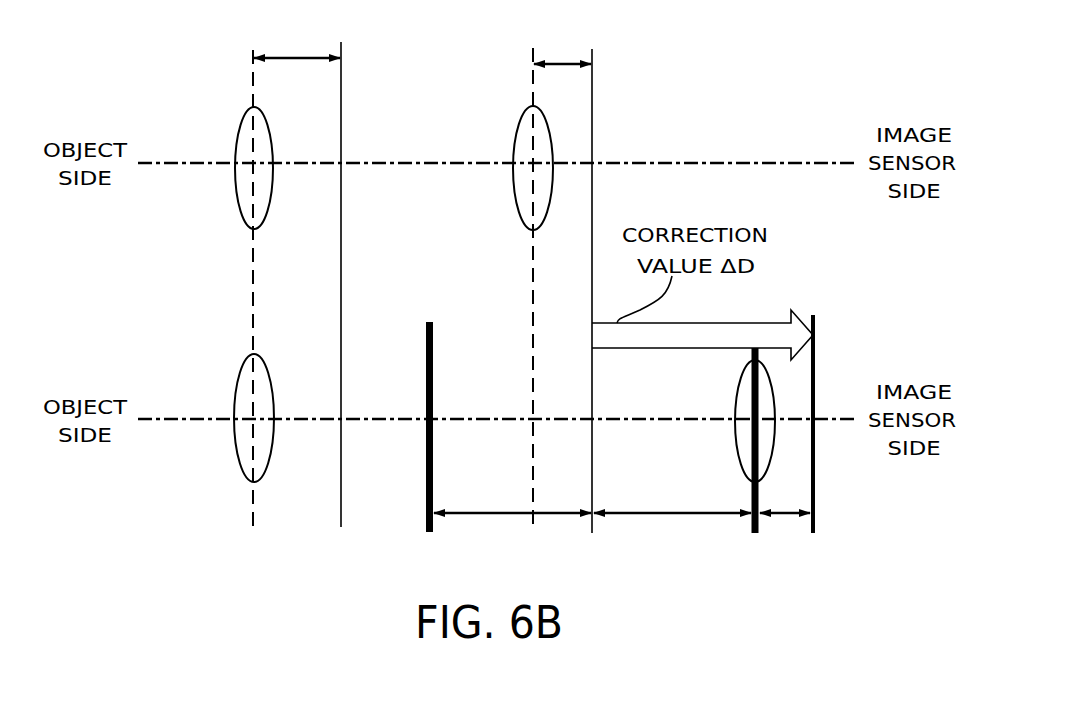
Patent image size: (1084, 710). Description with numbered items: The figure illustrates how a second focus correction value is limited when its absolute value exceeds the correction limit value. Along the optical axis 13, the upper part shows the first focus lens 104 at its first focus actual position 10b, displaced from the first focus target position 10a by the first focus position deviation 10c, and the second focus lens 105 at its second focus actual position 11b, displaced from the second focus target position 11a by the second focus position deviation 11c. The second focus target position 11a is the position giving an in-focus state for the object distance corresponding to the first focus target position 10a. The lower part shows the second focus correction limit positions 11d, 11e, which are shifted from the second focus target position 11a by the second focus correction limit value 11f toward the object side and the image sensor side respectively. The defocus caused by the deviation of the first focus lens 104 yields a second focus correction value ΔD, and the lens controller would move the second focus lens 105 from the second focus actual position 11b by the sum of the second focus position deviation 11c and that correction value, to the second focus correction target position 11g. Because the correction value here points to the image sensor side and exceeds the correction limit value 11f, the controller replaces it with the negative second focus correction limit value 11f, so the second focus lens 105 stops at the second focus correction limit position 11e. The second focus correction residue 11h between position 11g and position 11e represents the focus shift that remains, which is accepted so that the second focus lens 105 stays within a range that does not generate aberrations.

The first focus target position 10a is at (346, 272).
The first focus actual position 10b is at (258, 272).
The first focus position deviation 10c is at (297, 46).
The second focus target position 11a is at (608, 281).
The second focus actual position 11b is at (530, 279).
The second focus position deviation 11c is at (562, 51).
The second focus correction limit position 11d is at (444, 416).
The second focus correction limit position 11e is at (760, 416).
The second focus correction limit value 11f is at (592, 501).
The second focus correction target position 11g is at (825, 413).
The second focus correction residue 11h is at (785, 501).
The optical axis 13 is at (823, 163).
The first focus lens 104 is at (267, 122).
The second focus lens 105 is at (547, 122).